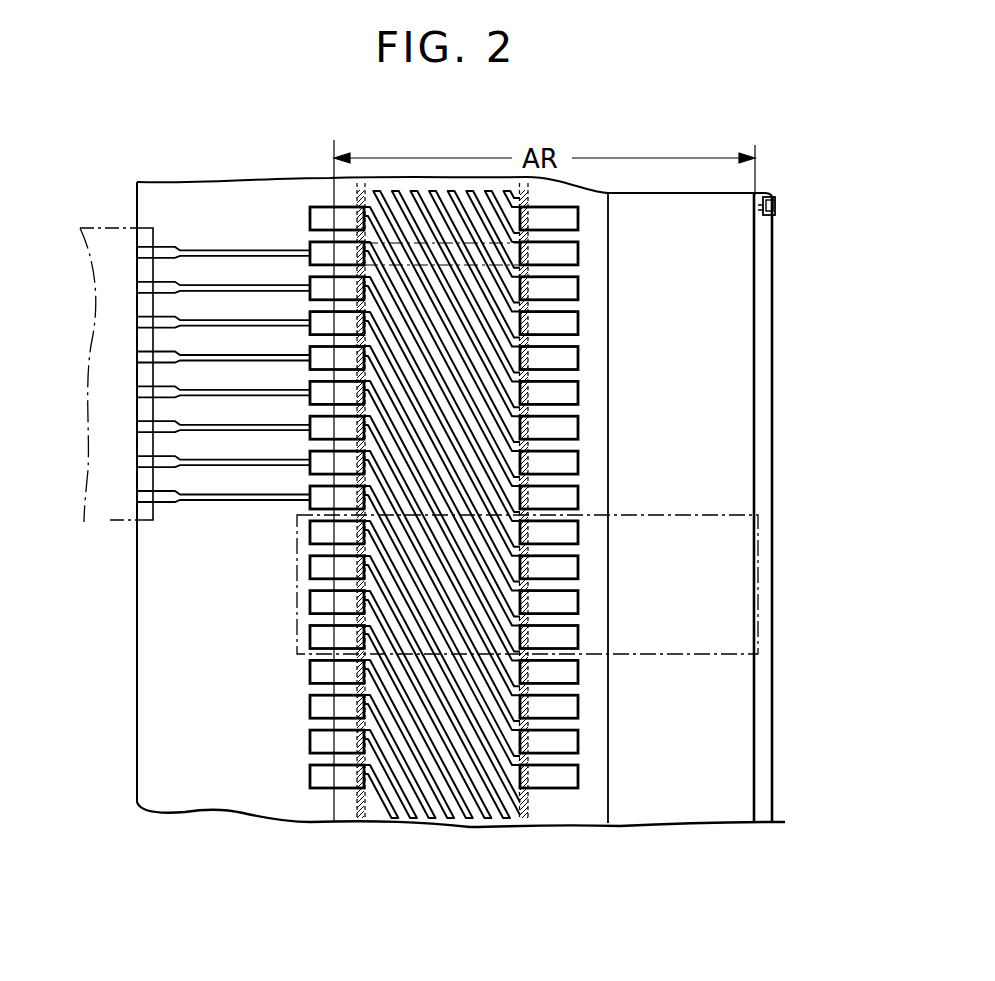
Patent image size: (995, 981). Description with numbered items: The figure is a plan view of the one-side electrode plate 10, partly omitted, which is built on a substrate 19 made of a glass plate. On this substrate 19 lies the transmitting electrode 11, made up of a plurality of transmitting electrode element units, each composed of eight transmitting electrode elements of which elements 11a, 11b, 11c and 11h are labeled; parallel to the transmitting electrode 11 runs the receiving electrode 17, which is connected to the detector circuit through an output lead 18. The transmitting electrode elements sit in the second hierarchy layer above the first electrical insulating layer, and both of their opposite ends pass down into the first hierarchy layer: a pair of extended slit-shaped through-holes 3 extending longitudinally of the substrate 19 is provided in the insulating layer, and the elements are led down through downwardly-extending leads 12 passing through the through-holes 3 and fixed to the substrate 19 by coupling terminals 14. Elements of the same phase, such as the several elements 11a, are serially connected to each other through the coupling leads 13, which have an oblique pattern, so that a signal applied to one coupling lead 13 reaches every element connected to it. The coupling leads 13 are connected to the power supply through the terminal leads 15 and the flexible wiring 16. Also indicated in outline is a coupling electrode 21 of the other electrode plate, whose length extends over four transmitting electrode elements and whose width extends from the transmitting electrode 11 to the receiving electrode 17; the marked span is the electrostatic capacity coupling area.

The one-side electrode plate 10 is at (814, 212).
The transmitting electrode 11 is at (848, 337).
The transmitting electrode element 11a is at (548, 254).
The transmitting electrode element 11b is at (548, 297).
The transmitting electrode element 11c is at (548, 333).
The transmitting electrode element 11h is at (548, 492).
The downwardly-extending leads 12 is at (357, 775).
The coupling leads 13 is at (441, 822).
The coupling terminals 14 is at (323, 783).
The terminal leads 15 is at (142, 357).
The flexible wiring 16 is at (86, 522).
The receiving electrode 17 is at (732, 718).
The output lead 18 is at (777, 206).
The substrate 19 is at (763, 750).
The coupling electrode 21 is at (692, 650).
The through-holes 3 is at (371, 820).